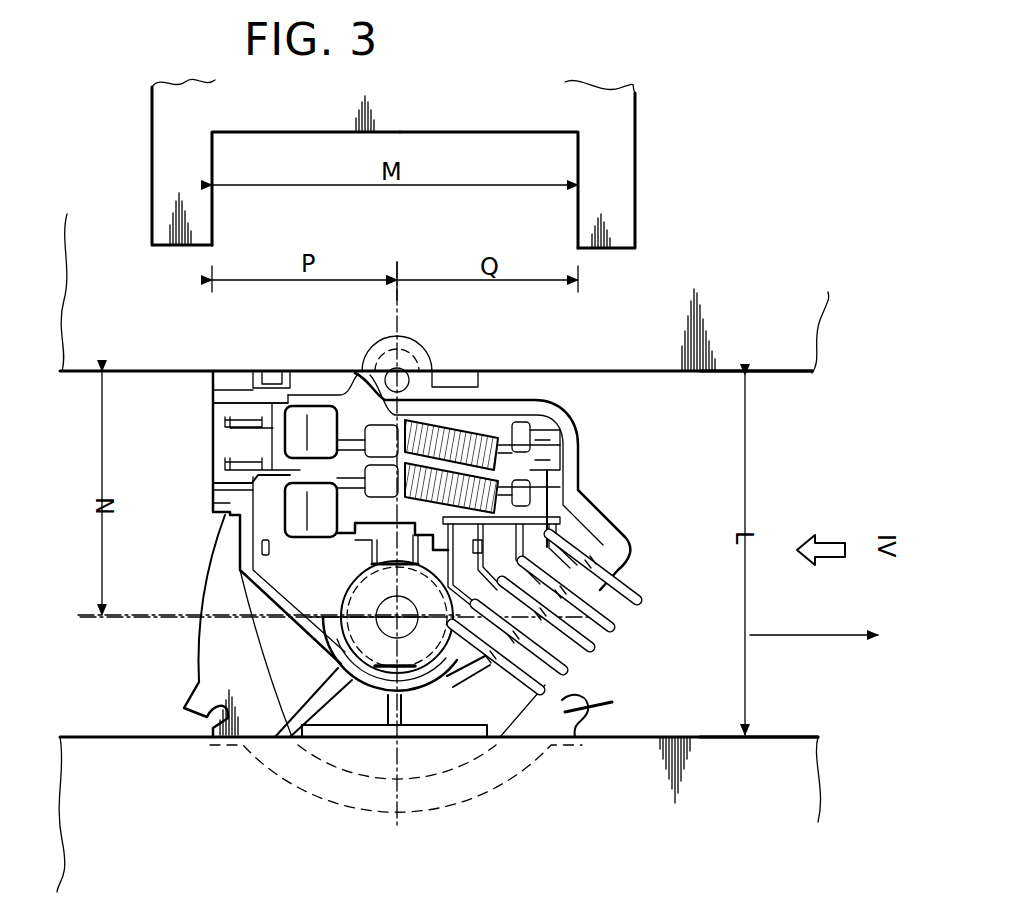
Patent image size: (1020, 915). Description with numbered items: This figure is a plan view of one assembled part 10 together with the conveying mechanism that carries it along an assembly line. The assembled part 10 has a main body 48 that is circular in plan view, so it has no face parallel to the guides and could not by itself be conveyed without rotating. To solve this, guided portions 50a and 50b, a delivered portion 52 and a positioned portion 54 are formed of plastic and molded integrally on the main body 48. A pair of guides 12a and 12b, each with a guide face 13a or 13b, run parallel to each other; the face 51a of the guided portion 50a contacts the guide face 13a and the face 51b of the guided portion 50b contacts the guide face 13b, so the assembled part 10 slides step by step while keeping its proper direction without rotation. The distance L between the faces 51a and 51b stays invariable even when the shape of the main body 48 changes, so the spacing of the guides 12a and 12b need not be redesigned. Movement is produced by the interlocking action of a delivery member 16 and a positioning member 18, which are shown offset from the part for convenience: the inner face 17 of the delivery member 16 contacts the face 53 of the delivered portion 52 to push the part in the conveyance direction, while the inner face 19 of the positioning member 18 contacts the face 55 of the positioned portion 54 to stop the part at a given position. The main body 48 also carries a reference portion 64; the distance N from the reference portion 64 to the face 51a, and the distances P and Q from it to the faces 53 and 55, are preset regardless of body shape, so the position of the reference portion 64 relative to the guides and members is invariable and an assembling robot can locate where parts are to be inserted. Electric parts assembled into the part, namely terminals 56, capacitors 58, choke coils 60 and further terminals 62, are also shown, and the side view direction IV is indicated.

The assembled part 10 is at (420, 270).
The guide 12a is at (814, 373).
The guide 12b is at (812, 737).
The guide face 13a is at (767, 378).
The guide face 13b is at (764, 737).
The delivery member 16 is at (158, 200).
The inner face 17 is at (214, 228).
The positioning member 18 is at (630, 200).
The inner face 19 is at (580, 222).
The main body 48 is at (258, 668).
The guided portion 50a is at (217, 372).
The guided portion 50b is at (472, 737).
The face 51a is at (234, 372).
The face 51b is at (425, 737).
The delivered portion 52 is at (214, 388).
The face 53 is at (214, 405).
The terminals 56 is at (218, 466).
The capacitors 58 is at (300, 405).
The positioned portion 54 is at (575, 445).
The face 55 is at (580, 462).
The choke coils 60 is at (560, 380).
The terminals 62 is at (617, 603).
The reference portion 64 is at (386, 613).